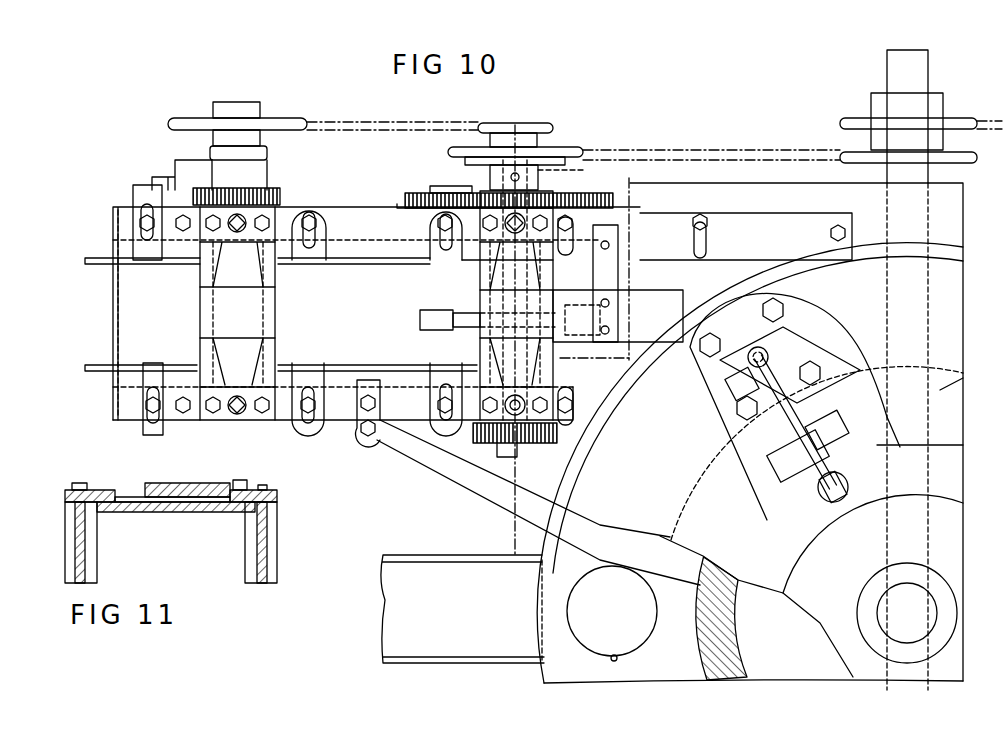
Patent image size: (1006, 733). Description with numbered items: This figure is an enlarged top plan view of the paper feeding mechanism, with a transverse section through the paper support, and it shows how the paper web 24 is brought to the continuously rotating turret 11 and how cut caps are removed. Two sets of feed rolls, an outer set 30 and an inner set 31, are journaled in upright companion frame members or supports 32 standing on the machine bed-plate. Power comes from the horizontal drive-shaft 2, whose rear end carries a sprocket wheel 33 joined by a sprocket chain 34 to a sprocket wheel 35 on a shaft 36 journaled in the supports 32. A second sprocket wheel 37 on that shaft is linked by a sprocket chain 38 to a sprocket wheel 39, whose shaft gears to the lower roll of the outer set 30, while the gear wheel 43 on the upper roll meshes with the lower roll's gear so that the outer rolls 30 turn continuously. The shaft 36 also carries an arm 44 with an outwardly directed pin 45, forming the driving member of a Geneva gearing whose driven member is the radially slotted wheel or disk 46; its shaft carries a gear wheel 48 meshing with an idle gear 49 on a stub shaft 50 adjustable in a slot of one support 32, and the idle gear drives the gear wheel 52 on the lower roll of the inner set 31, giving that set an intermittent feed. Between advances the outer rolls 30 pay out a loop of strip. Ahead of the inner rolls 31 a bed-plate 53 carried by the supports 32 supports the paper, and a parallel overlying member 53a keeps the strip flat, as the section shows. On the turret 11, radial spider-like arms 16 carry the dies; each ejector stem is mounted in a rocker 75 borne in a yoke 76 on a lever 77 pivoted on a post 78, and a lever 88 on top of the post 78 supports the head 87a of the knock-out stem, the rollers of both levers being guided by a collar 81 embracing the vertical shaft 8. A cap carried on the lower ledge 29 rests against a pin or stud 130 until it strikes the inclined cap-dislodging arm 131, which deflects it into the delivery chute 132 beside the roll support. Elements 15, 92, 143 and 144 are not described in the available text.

In FIG. 10, the drive-shaft 2 is at (890, 72).
In FIG. 10, the vertical shaft 8 is at (910, 640).
In FIG. 10, the turret 11 is at (625, 188).
In FIG. 10, the pin 15 is at (821, 494).
In FIG. 10, the radial spider-like arms 16 is at (817, 416).
In FIG. 11, the paper web 24 is at (131, 496).
In FIG. 10, the lower ledge 29 is at (540, 676).
In FIG. 10, the outer set of feed rolls 30 is at (200, 313).
In FIG. 10, the inner set of feed rolls 31 is at (487, 332).
In FIG. 10, the frame members or supports 32 is at (333, 415).
In FIG. 11, the frame members or supports 32 is at (70, 563).
In FIG. 10, the sprocket wheel 33 is at (856, 157).
In FIG. 10, the sprocket chain 34 is at (708, 153).
In FIG. 10, the sprocket wheel 35 is at (560, 150).
In FIG. 10, the shaft 36 is at (549, 175).
In FIG. 10, the second sprocket wheel 37 is at (516, 124).
In FIG. 10, the sprocket chain 38 is at (392, 115).
In FIG. 10, the sprocket wheel 39 is at (283, 125).
In FIG. 10, the gear wheel 43 is at (276, 194).
In FIG. 10, the arm 44 is at (593, 361).
In FIG. 10, the pin 45 is at (612, 308).
In FIG. 10, the radially slotted wheel or disk 46 is at (420, 320).
In FIG. 10, the gear wheel 48 is at (613, 201).
In FIG. 10, the idle gear 49 is at (408, 193).
In FIG. 10, the stub shaft 50 is at (446, 179).
In FIG. 10, the gear wheel 52 is at (488, 195).
In FIG. 10, the bed-plate 53 is at (722, 272).
In FIG. 11, the bed-plate 53 is at (132, 512).
In FIG. 10, the overlying member 53a is at (686, 288).
In FIG. 11, the overlying member 53a is at (172, 490).
In FIG. 10, the rocker 75 is at (755, 347).
In FIG. 10, the yoke 76 is at (732, 389).
In FIG. 10, the lever 77 is at (796, 407).
In FIG. 10, the support or post 78 is at (782, 455).
In FIG. 10, the collar 81 is at (802, 560).
In FIG. 10, the head 87a is at (822, 345).
In FIG. 10, the lever 88 is at (784, 414).
In FIG. 10, the crank pin 92 is at (592, 645).
In FIG. 10, the pin or stud 130 is at (616, 661).
In FIG. 10, the cap-dislodging arm 131 is at (467, 485).
In FIG. 10, the delivery chute 132 is at (383, 620).
In FIG. 10, the belt 143 is at (980, 118).
In FIG. 10, the pulley 144 is at (858, 120).